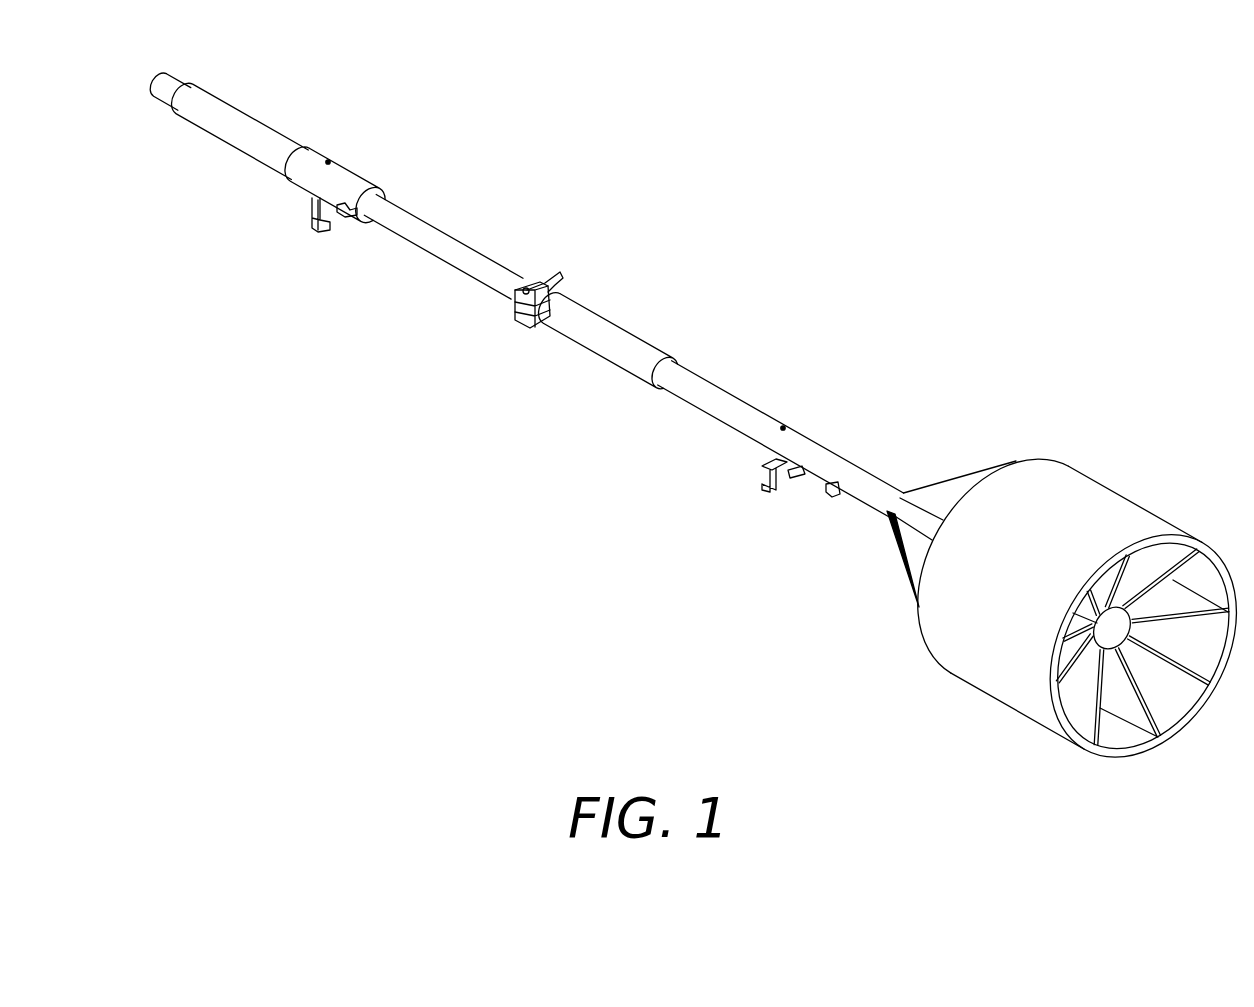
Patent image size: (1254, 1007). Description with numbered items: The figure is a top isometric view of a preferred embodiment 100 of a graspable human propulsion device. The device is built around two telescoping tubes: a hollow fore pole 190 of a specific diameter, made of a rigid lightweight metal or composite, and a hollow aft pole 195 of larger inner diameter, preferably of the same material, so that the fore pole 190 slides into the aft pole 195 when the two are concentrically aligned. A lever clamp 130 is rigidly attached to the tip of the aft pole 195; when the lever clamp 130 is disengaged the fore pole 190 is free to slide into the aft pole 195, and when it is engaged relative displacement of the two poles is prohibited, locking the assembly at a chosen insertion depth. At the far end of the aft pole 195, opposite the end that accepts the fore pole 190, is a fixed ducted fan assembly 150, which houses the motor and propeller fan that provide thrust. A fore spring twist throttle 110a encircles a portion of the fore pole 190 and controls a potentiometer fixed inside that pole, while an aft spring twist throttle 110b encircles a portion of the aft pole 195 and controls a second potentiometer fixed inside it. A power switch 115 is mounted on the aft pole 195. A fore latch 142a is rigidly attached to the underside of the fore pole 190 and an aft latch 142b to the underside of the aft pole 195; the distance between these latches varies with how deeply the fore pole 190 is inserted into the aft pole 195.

The embodiment 1 100 is at (820, 240).
The fore spring twist throttle 110a is at (237, 152).
The aft spring twist throttle 110b is at (602, 362).
The power switch 115 is at (838, 500).
The lever clamp 130 is at (517, 327).
The fore latch 142a is at (318, 232).
The aft latch 142b is at (775, 495).
The ducted fan assembly 150 is at (1106, 442).
The fore pole 190 is at (410, 210).
The aft pole 195 is at (747, 403).